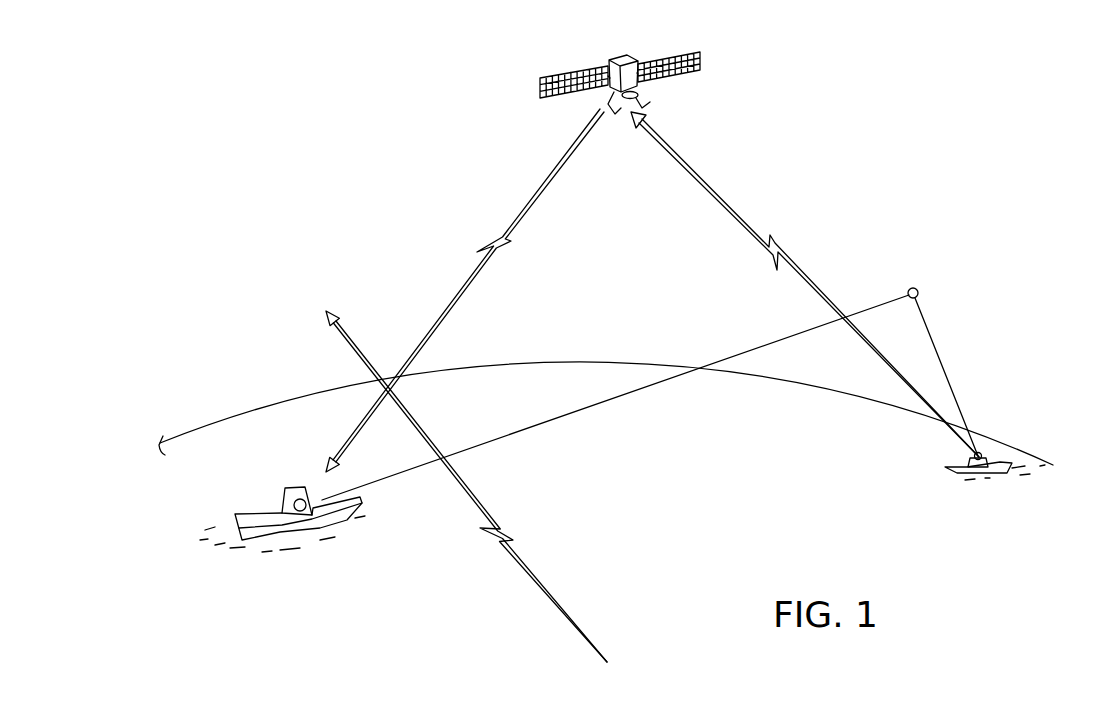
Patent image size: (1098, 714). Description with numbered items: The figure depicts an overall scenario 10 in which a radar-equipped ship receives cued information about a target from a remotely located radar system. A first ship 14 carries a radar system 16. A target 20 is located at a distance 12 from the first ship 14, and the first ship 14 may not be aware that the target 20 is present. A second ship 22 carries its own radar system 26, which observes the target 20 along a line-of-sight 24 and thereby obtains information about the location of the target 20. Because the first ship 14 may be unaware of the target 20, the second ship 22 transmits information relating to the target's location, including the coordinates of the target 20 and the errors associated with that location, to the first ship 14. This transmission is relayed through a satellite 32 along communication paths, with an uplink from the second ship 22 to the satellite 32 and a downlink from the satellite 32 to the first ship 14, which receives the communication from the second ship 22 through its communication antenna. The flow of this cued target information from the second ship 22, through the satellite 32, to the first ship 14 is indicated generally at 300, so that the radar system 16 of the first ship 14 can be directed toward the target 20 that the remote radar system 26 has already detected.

The navigation/communication system 10 is at (609, 347).
The distance 12 is at (518, 428).
The first ship 14 is at (258, 508).
The radar system 16 is at (298, 488).
The target 20 is at (917, 288).
The second ship 22 is at (958, 466).
The line-of-sight 24 is at (947, 373).
The radar system 26 is at (987, 453).
The satellite 32 is at (619, 58).
The communication signals 300 is at (701, 168).